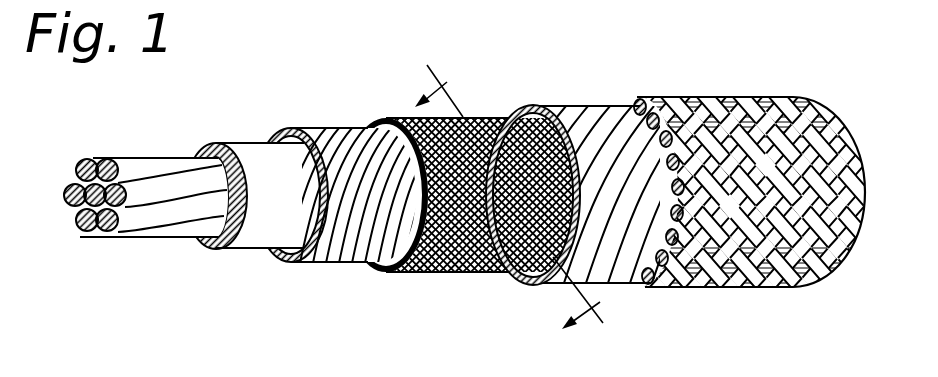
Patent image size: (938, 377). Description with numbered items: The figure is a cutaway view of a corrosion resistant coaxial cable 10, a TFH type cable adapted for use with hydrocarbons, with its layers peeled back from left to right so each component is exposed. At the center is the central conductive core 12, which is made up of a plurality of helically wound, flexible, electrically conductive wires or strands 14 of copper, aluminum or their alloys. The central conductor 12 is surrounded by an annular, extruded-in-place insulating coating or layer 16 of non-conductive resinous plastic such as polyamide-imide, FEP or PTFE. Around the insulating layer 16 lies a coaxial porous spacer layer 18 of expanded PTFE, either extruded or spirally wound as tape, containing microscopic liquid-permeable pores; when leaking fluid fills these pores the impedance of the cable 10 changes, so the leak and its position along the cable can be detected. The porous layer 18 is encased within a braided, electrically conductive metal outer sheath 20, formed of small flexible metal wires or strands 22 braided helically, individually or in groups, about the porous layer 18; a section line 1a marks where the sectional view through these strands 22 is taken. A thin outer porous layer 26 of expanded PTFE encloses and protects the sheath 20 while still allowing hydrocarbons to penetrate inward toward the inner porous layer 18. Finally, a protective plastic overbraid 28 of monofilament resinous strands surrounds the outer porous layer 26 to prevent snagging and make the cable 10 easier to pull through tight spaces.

The corrosion resistant cable 10 is at (463, 345).
The central conductive core 12 is at (146, 199).
The electrically conductive wires or strands 14 is at (160, 183).
The insulating coating or layer 16 is at (232, 130).
The porous spacer layer 18 is at (322, 250).
The braided electrically conductive metal outer sheath 20 is at (474, 102).
The conductive metal wires or strands 22 is at (386, 272).
The outer porous layer 26 is at (632, 274).
The protective plastic overbraid 28 is at (746, 282).
The section line 1a- 1a is at (509, 188).